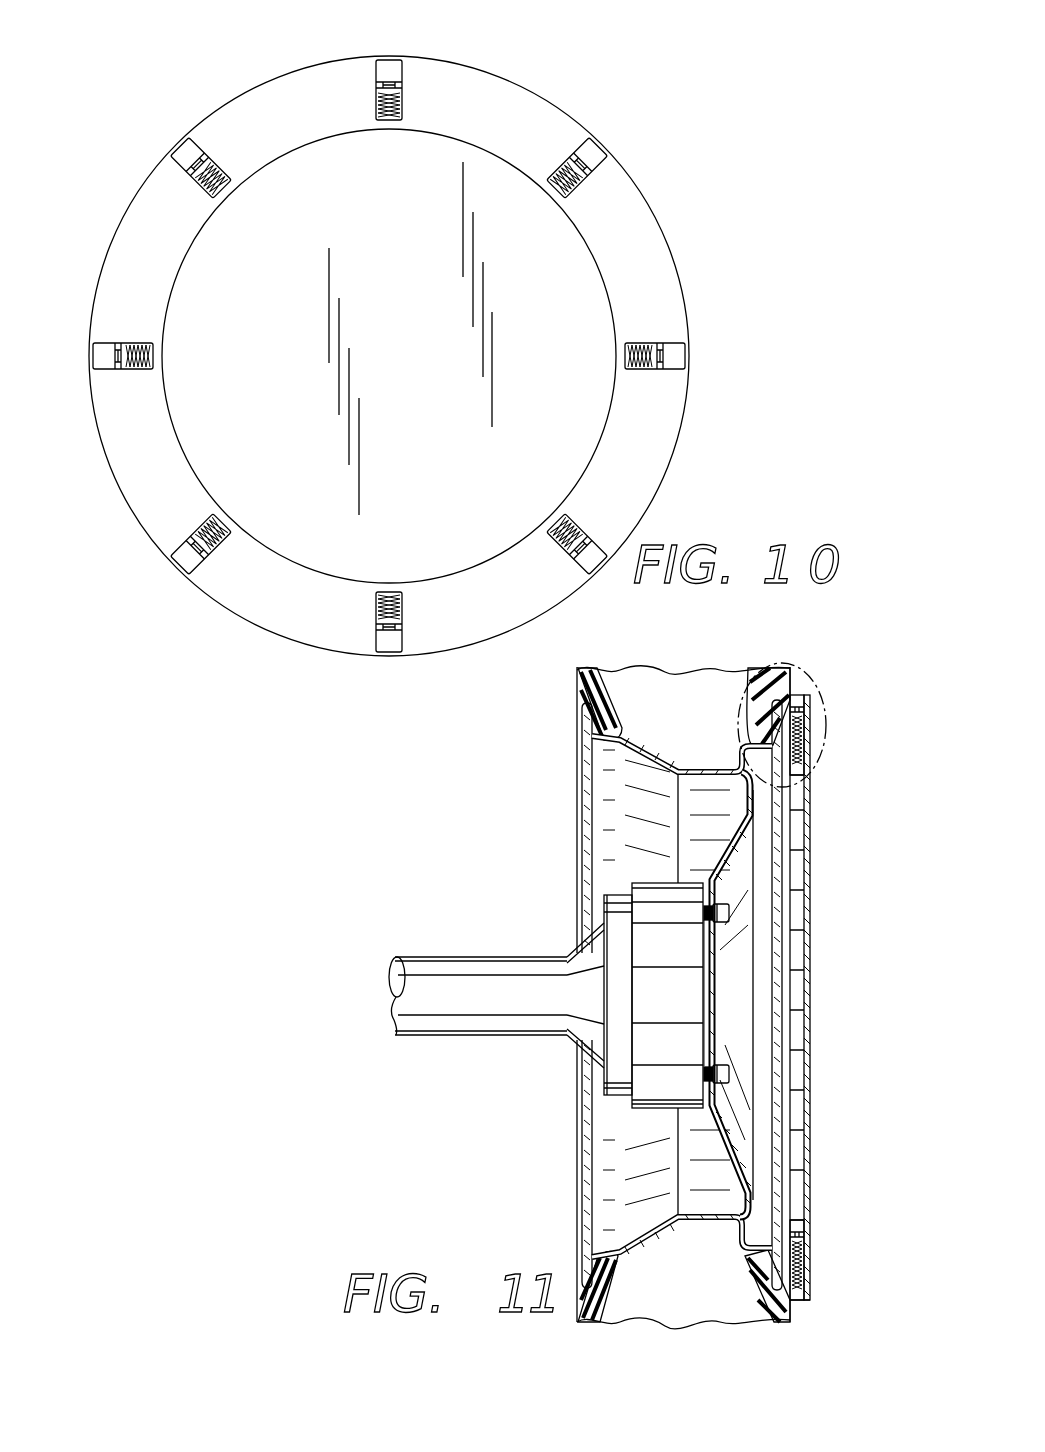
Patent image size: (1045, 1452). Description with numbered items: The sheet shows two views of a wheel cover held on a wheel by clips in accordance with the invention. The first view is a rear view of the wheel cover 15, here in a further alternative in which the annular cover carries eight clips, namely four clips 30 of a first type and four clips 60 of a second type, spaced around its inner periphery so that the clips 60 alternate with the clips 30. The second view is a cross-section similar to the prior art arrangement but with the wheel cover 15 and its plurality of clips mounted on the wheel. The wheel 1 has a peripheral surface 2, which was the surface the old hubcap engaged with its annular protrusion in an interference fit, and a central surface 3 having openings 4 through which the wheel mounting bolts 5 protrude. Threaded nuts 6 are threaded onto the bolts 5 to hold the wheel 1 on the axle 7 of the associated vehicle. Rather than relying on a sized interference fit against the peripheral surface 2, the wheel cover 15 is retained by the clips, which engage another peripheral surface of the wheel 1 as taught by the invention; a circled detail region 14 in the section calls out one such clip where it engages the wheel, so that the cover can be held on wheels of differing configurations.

In FIG. 11, the wheel 1 is at (572, 864).
In FIG. 11, the peripheral surface 2 is at (740, 748).
In FIG. 11, the central surface 3 is at (716, 1115).
In FIG. 11, the openings 4 is at (714, 1068).
In FIG. 11, the wheel mounting bolts 5 is at (712, 1086).
In FIG. 11, the threaded nuts 6 is at (722, 914).
In FIG. 11, the axle 7 is at (466, 1022).
In FIG. 11, the locking device 14 is at (814, 678).
In FIG. 10, the wheel cover 15 is at (243, 640).
In FIG. 11, the wheel cover 15 is at (818, 856).
In FIG. 10, the clips of a first type 30 is at (168, 140).
In FIG. 10, the clips of a second type 60 is at (414, 58).